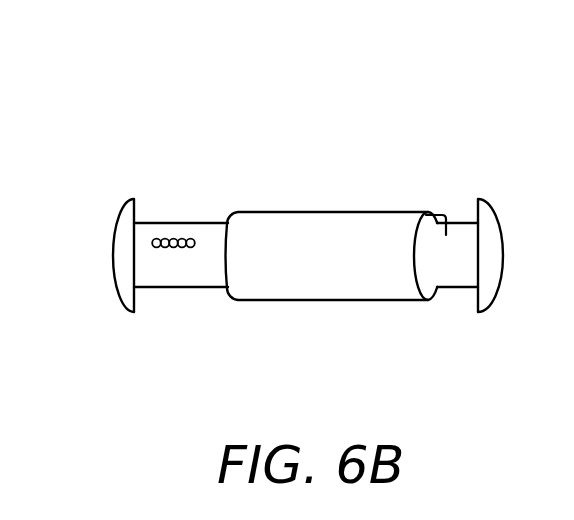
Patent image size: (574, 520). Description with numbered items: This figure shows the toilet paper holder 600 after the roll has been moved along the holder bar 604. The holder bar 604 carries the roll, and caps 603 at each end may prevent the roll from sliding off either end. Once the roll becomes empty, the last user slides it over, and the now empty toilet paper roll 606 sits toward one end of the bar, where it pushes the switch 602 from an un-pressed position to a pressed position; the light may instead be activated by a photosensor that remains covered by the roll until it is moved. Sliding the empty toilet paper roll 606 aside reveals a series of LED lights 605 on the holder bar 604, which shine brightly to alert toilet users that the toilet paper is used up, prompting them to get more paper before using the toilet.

The toilet paper holder 600 is at (94, 86).
The switch 602 is at (433, 213).
The cap 603 is at (116, 238).
The holder bar 604 is at (195, 290).
The LED lights 605 is at (177, 237).
The empty toilet paper roll 606 is at (328, 212).